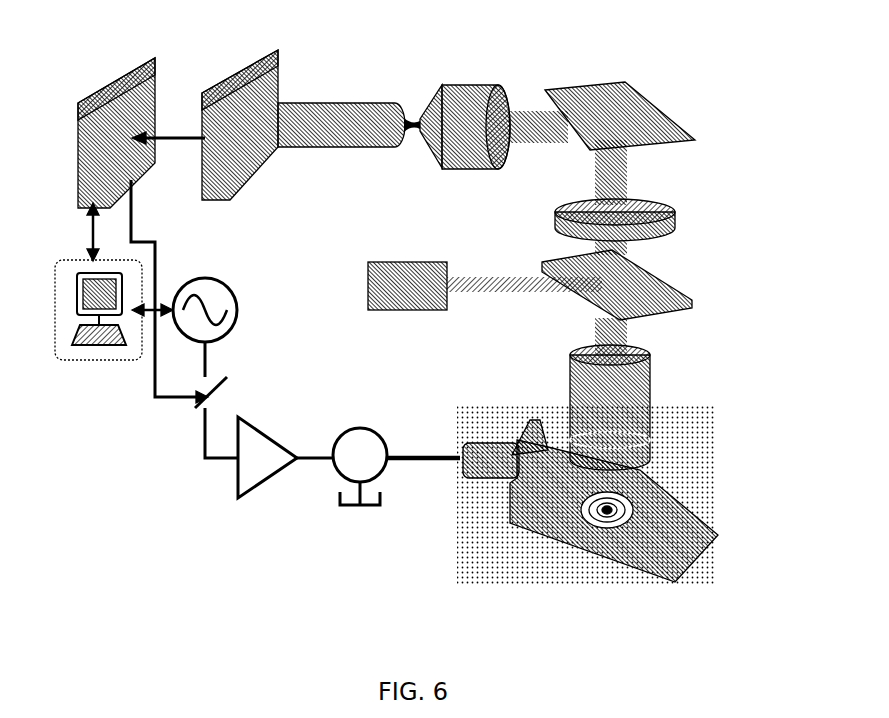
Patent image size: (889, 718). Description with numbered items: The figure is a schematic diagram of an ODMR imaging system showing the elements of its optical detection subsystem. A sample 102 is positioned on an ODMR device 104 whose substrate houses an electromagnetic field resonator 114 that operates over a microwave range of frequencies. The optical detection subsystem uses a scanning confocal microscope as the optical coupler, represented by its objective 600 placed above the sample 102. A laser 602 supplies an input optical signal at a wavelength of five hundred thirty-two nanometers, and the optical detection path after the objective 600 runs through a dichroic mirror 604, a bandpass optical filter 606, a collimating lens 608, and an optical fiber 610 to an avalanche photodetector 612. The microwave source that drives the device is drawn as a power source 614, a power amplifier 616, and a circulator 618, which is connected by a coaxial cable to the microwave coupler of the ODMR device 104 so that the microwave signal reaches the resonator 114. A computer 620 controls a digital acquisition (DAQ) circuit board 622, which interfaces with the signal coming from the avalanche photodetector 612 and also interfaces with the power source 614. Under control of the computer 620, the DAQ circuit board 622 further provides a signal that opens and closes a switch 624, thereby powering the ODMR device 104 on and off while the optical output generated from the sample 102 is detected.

The digital acquisition (DAQ) circuit board 622 is at (121, 111).
The avalanche photodetector 612 is at (299, 118).
The optical fiber 610 is at (349, 138).
The collimating lens 608 is at (465, 115).
The bandpass optical filter 606 is at (702, 212).
The dichroic mirror 604 is at (700, 285).
The laser 602 is at (485, 273).
The objective 600 is at (691, 407).
The ODMR device 104 is at (637, 568).
The resonator 114 is at (583, 513).
The sample 102 is at (612, 509).
The computer 620 is at (80, 310).
The power source 614 is at (233, 322).
The switch 624 is at (229, 415).
The power amplifier 616 is at (277, 489).
The circulator 618 is at (383, 453).